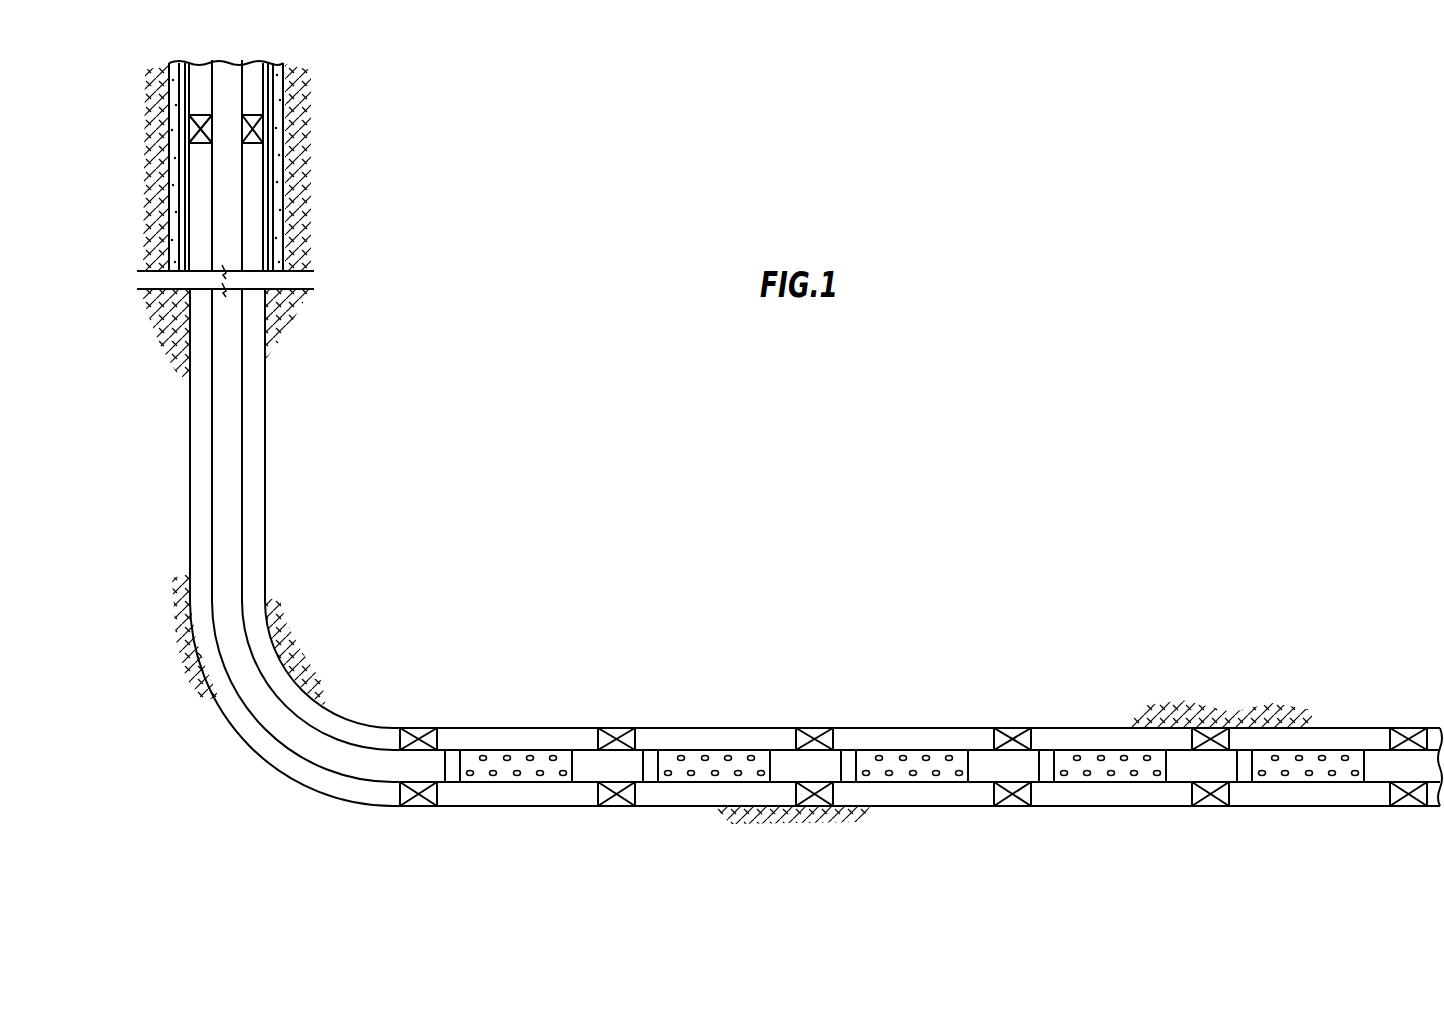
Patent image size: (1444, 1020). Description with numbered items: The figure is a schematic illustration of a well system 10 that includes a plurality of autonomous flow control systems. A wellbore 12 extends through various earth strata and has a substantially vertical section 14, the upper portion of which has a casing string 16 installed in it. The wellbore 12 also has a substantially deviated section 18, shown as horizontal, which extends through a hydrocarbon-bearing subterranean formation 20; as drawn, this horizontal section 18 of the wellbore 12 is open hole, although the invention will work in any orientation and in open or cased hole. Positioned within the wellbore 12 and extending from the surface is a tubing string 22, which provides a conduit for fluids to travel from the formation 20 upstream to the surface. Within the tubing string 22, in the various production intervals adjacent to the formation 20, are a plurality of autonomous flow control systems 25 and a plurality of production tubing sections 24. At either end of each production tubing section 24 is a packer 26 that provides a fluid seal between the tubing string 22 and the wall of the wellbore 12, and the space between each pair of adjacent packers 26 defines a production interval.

The well system 10 is at (497, 328).
The wellbore 12 is at (267, 443).
The substantially vertical section 14 is at (266, 394).
The casing string 16 is at (270, 210).
The substantially deviated section 18 is at (735, 731).
The hydrocarbon-bearing subterranean formation 20 is at (786, 632).
The tubing string 22 is at (254, 470).
The production tubing section 24 is at (520, 750).
The autonomous flow control system 25 is at (455, 750).
The packer 26 is at (422, 807).